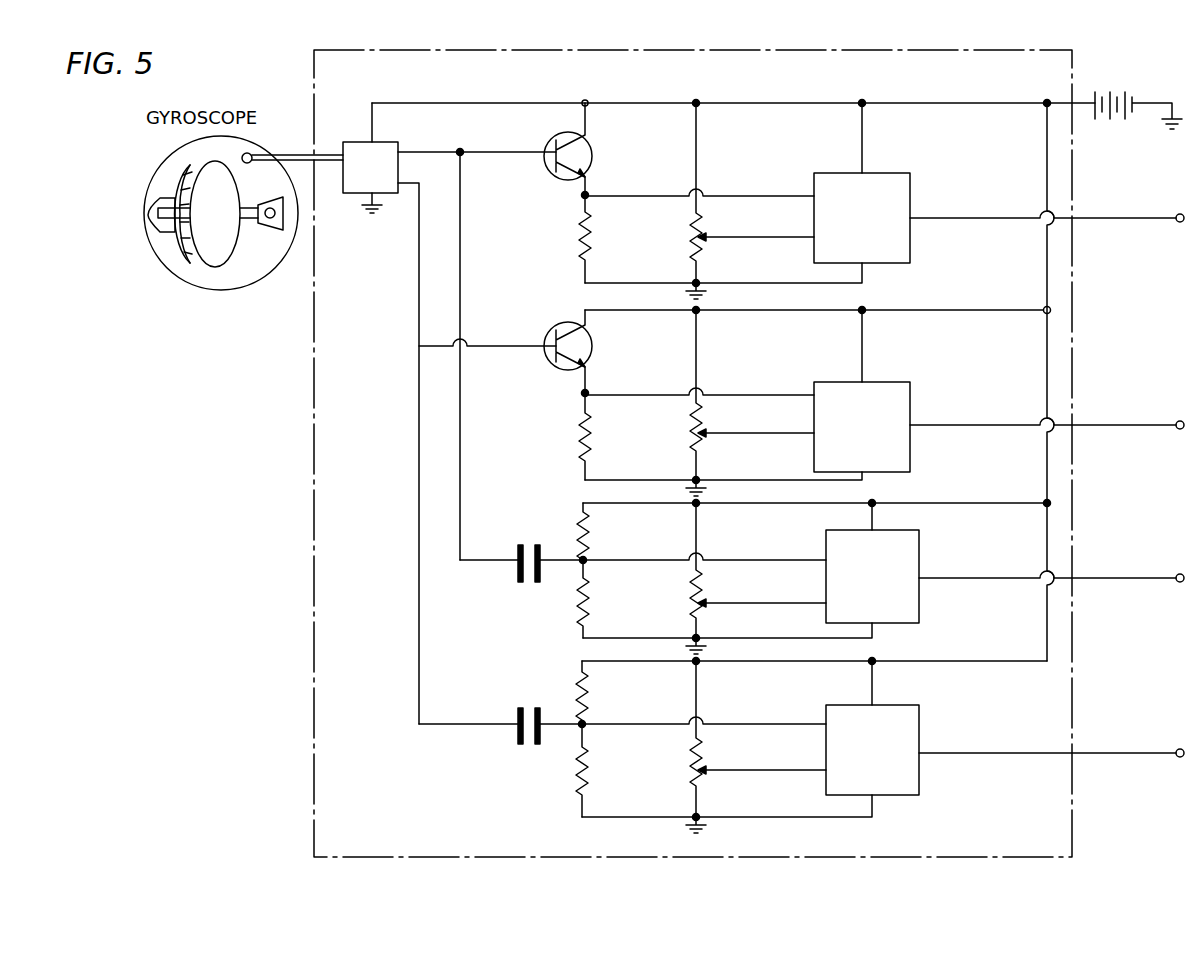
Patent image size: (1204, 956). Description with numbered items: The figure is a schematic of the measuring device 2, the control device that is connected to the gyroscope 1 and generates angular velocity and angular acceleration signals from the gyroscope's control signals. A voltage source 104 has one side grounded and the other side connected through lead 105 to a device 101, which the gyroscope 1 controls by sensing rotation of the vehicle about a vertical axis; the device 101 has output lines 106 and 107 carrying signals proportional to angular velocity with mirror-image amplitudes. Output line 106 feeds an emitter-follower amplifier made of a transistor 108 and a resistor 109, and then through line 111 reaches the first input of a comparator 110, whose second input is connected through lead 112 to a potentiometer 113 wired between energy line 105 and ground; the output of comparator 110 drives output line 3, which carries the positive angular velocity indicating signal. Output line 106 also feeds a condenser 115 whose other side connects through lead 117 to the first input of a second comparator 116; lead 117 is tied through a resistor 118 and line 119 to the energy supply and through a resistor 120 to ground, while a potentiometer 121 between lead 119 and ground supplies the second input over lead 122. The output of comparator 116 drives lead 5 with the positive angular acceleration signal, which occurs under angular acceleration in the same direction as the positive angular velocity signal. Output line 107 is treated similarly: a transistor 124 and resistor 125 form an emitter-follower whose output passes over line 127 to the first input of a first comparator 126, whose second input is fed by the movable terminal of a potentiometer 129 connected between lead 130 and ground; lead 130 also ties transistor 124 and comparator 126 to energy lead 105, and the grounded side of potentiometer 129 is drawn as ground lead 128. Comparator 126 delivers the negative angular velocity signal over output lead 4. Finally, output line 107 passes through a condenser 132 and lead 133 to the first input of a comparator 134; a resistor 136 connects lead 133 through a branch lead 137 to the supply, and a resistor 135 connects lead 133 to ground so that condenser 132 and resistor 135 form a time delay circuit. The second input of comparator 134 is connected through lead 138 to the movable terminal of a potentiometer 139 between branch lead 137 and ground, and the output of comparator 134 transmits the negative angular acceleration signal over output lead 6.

The gyroscope 1 is at (218, 256).
The measuring device 2 is at (300, 483).
The output line 3 is at (1108, 218).
The output lead 4 is at (1108, 425).
The lead 5 is at (1105, 578).
The output lead 6 is at (1105, 753).
The device 101 is at (366, 196).
The voltage source 104 is at (1114, 118).
The lead 105 is at (543, 104).
The output line 106 is at (440, 145).
The output line 107 is at (420, 198).
The transistor 108 is at (552, 178).
The resistor 109 is at (580, 241).
The comparator 110 is at (895, 173).
The line 111 is at (740, 190).
The lead 112 is at (746, 240).
The potentiometer 113 is at (690, 241).
The condenser 115 is at (520, 548).
The second comparator 116 is at (921, 562).
The lead 117 is at (624, 560).
The resistor 118 is at (576, 530).
The line 119 is at (866, 503).
The resistor 120 is at (578, 602).
The potentiometer 121 is at (690, 603).
The lead 122 is at (750, 603).
The transistor 124 is at (552, 364).
The resistor 125 is at (580, 440).
The first comparator 126 is at (912, 412).
The line 127 is at (735, 390).
The ground conductor 128 is at (722, 480).
The potentiometer 129 is at (690, 435).
The lead 130 is at (920, 310).
The condenser 132 is at (520, 710).
The lead 133 is at (722, 724).
The comparator 134 is at (921, 733).
The resistor 135 is at (576, 760).
The resistor 136 is at (576, 692).
The branch lead 137 is at (950, 661).
The lead 138 is at (742, 772).
The potentiometer 139 is at (690, 770).